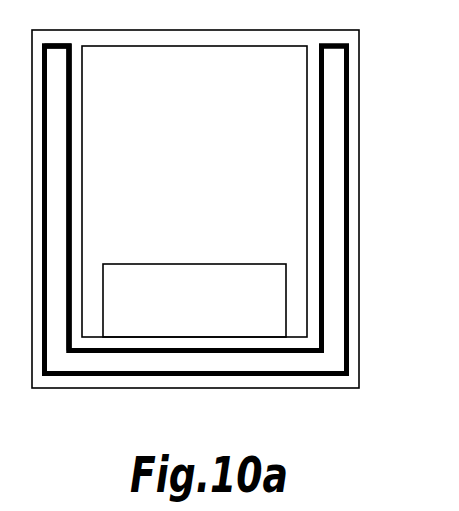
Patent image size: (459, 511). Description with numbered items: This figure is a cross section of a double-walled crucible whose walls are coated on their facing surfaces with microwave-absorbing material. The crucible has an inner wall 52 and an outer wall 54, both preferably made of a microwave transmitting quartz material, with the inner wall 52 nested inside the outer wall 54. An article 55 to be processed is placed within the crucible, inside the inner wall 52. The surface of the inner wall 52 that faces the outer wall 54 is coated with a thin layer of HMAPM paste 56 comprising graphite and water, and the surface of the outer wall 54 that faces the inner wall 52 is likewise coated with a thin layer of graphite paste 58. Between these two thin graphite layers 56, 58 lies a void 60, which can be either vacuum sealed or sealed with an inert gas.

The inner wall 52 is at (307, 103).
The outer wall 54 is at (360, 107).
The article 55 is at (208, 309).
The HMAPM paste layer 56 is at (70, 137).
The graphite paste layer 58 is at (348, 242).
The void 60 is at (334, 319).